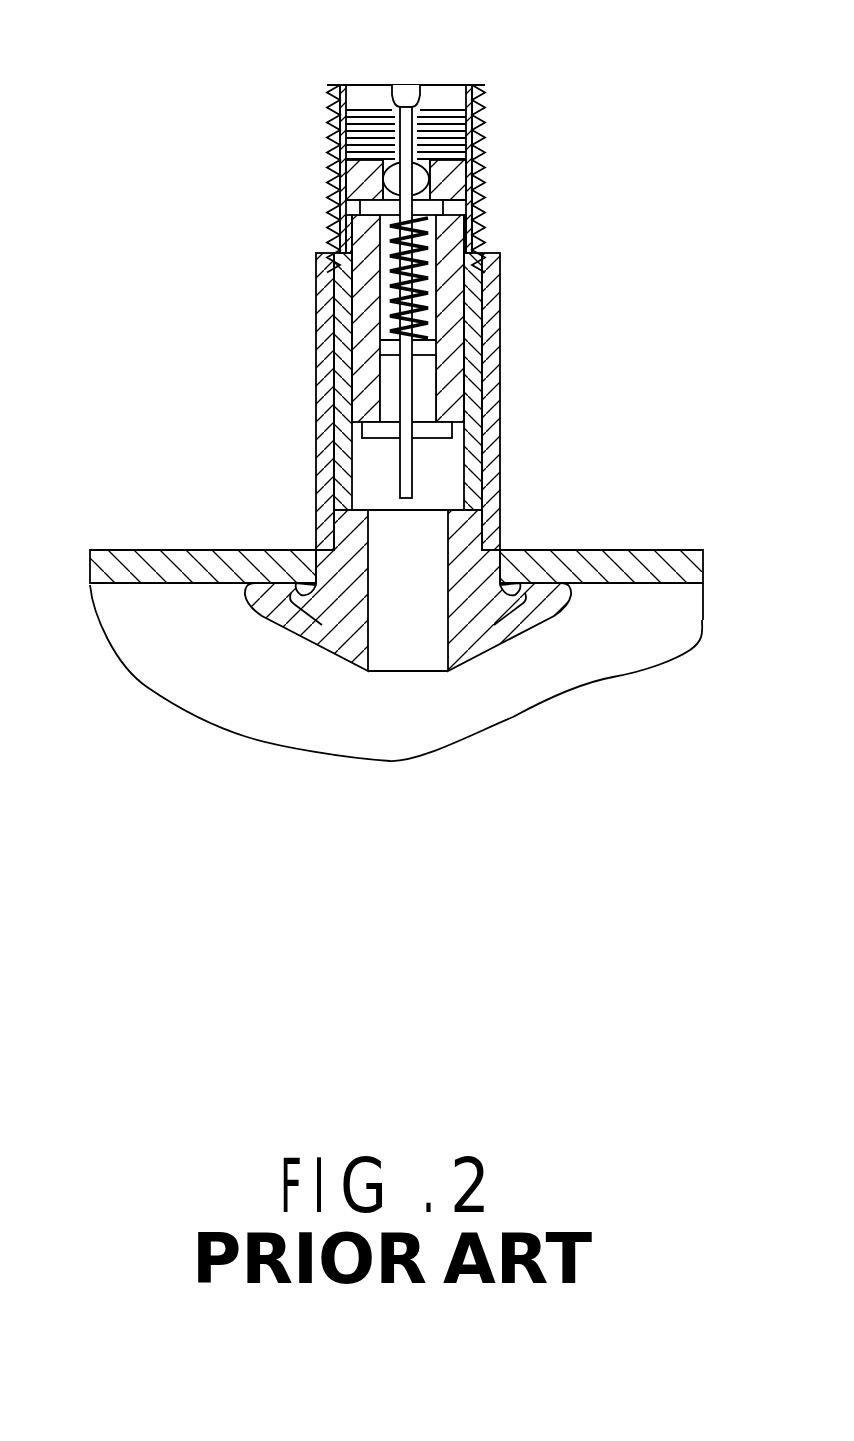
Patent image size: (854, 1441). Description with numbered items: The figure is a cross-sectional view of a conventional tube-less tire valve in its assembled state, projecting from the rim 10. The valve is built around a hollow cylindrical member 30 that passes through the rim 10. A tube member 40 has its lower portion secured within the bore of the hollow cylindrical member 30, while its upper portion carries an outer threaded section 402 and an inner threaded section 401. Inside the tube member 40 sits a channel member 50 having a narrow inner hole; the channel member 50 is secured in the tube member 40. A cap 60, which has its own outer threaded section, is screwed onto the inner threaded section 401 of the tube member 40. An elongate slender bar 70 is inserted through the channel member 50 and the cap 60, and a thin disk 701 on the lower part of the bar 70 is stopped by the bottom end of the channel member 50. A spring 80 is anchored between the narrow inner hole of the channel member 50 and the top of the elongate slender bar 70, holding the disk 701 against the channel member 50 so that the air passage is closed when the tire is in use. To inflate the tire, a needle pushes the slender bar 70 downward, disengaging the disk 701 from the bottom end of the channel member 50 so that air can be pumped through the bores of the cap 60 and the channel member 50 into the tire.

The rim 10 is at (175, 551).
The hollow cylindrical member 30 is at (498, 538).
The tube member 40 is at (483, 433).
The inner threaded section 401 is at (367, 137).
The outer threaded section 402 is at (327, 169).
The channel member 50 is at (447, 342).
The cap 60 is at (447, 210).
The elongate slender bar 70 is at (400, 380).
The thin disk 701 is at (383, 438).
The spring 80 is at (332, 316).